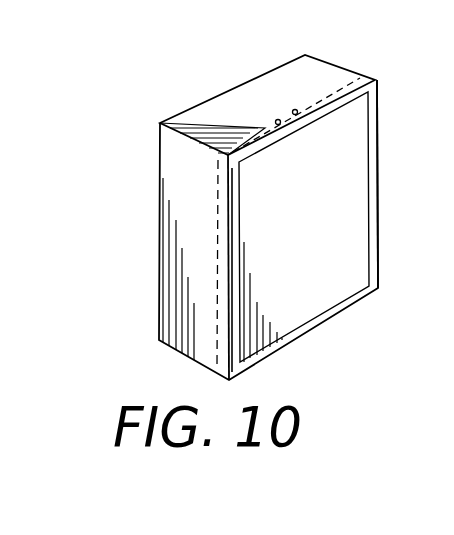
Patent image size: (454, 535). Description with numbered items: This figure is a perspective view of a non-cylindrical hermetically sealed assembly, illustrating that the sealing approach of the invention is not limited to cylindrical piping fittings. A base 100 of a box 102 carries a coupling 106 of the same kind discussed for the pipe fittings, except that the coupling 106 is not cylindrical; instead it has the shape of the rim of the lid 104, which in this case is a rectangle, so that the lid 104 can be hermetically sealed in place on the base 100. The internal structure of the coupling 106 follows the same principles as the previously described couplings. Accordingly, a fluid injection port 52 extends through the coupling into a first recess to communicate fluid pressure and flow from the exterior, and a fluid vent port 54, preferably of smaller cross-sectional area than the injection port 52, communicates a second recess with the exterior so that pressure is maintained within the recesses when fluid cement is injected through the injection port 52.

The base 100 is at (208, 112).
The box 102 is at (140, 212).
The lid 104 is at (343, 214).
The coupling 106 is at (368, 74).
The fluid injection port 52 is at (295, 109).
The fluid vent port 54 is at (277, 120).